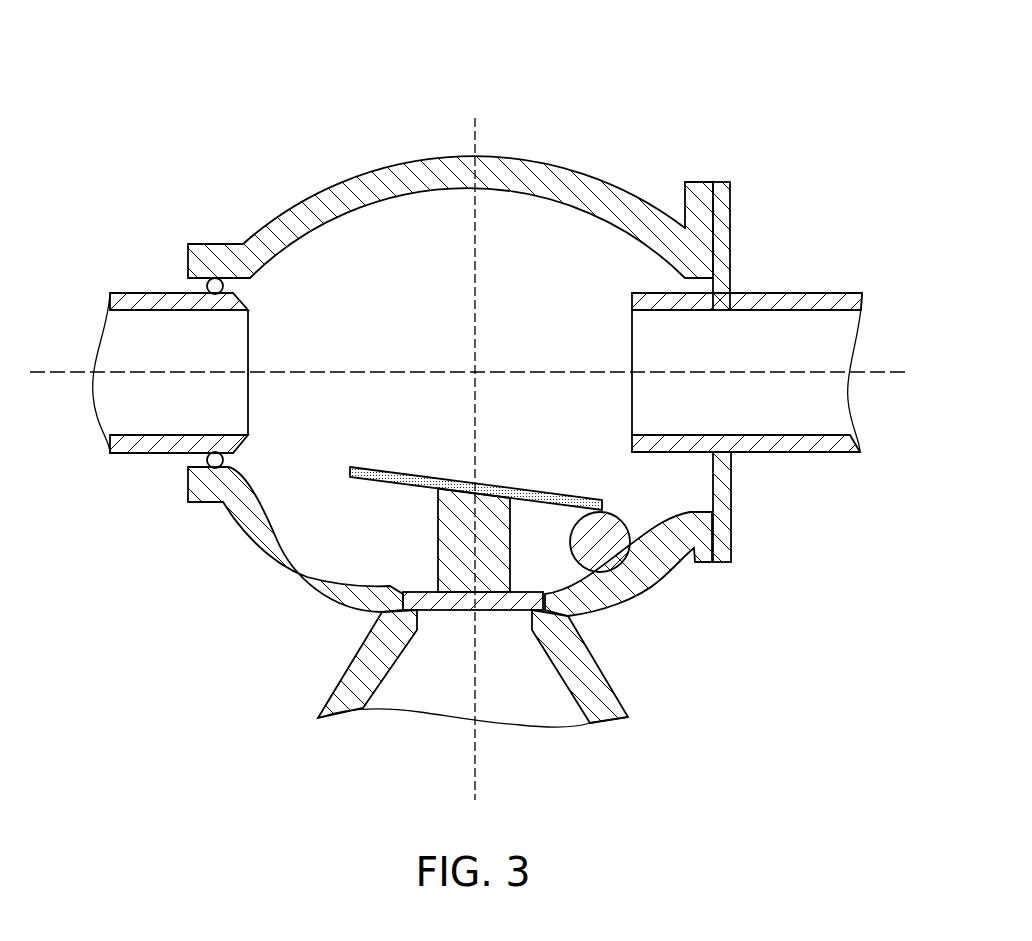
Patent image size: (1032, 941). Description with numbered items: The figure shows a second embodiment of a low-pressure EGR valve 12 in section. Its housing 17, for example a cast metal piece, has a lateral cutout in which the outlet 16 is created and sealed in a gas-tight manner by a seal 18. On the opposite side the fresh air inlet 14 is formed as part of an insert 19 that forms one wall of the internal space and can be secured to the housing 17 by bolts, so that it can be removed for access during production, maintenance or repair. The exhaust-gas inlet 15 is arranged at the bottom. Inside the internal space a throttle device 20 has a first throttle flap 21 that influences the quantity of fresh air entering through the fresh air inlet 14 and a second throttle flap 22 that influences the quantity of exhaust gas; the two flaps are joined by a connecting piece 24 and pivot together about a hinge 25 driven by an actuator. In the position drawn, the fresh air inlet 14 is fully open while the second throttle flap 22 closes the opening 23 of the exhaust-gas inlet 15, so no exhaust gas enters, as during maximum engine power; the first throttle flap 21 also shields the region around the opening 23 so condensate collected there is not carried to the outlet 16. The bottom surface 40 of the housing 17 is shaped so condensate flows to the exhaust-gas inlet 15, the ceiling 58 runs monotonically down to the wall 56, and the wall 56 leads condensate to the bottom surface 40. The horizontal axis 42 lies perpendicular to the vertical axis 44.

The low-pressure EGR valve 12 is at (660, 92).
The fresh air inlet 14 is at (786, 335).
The exhaust-gas inlet 15 is at (515, 703).
The outlet 16 is at (112, 405).
The housing 17 is at (450, 408).
The seal 18 is at (206, 288).
The insert 19 is at (719, 216).
The throttle device 20 is at (511, 395).
The first throttle flap 21 is at (362, 466).
The second throttle flap 22 is at (467, 610).
The opening 23 is at (447, 703).
The connecting piece 24 is at (463, 491).
The hinge 25 is at (607, 512).
The bottom surface 40 is at (672, 514).
The horizontal axis 42 is at (886, 366).
The vertical axis 44 is at (470, 140).
The wall 56 is at (281, 310).
The ceiling 58 is at (437, 194).